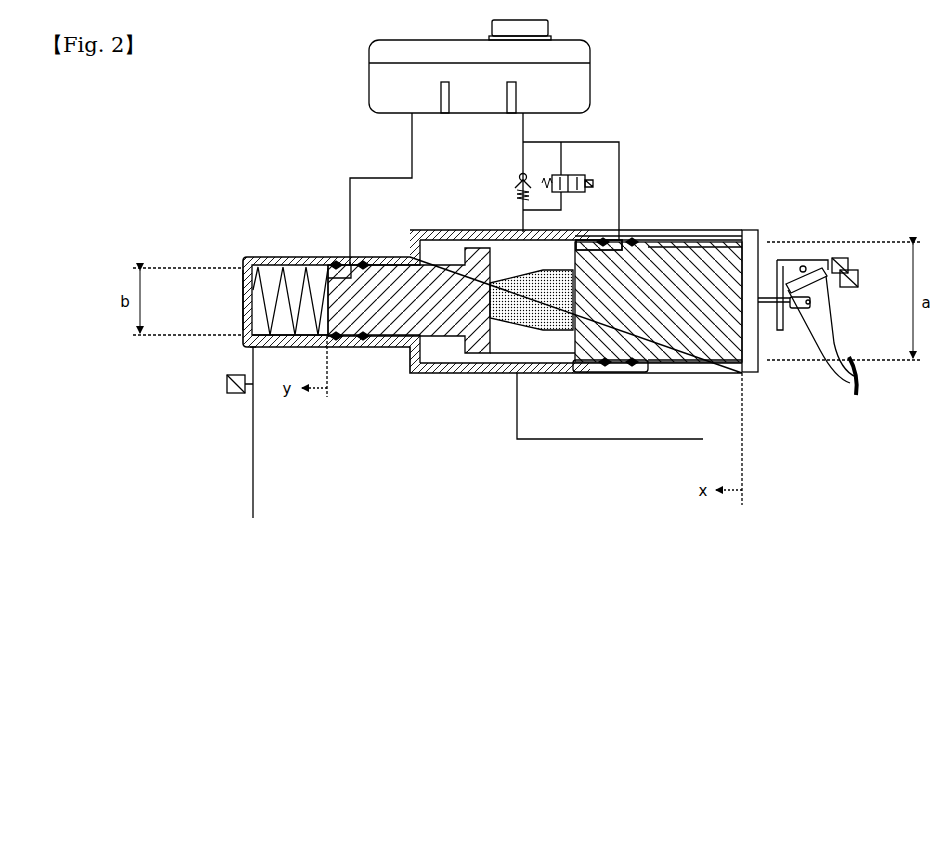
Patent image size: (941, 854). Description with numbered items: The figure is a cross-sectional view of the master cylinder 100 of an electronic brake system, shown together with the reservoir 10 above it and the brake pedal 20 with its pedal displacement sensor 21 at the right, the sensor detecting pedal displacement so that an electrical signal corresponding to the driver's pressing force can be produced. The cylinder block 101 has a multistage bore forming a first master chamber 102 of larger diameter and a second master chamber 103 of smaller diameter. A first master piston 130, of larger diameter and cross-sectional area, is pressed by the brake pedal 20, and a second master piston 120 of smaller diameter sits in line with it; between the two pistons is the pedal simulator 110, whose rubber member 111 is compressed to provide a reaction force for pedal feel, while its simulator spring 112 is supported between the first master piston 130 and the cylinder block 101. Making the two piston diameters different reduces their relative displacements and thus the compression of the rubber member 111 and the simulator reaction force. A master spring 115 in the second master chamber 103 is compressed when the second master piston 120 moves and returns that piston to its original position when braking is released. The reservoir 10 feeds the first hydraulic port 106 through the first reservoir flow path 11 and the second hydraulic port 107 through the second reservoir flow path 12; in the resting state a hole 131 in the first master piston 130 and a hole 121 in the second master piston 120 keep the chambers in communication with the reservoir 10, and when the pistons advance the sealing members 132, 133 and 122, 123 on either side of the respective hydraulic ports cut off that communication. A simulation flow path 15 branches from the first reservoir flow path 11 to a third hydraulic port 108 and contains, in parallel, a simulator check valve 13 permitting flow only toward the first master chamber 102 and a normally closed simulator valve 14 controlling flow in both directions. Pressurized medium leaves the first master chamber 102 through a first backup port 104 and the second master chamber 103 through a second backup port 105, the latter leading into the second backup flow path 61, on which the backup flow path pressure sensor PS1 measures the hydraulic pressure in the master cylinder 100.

The reservoir 10 is at (590, 63).
The first reservoir flow path 11 is at (619, 160).
The second reservoir flow path 12 is at (412, 150).
The simulator check valve 13 is at (519, 174).
The simulator valve 14 is at (572, 175).
The simulation flow path 15 is at (561, 208).
The brake pedal 20 is at (822, 331).
The pedal displacement sensor 21 is at (858, 272).
The second backup flow path 61 is at (253, 497).
The master cylinder 100 is at (238, 250).
The cylinder block 101 is at (247, 277).
The first master chamber 102 is at (575, 368).
The second master chamber 103 is at (262, 303).
The first backup port 104 is at (510, 373).
The second backup port 105 is at (253, 348).
The first hydraulic port 106 is at (621, 236).
The second hydraulic port 107 is at (352, 260).
The third hydraulic port 108 is at (523, 232).
The pedal simulator 110 is at (520, 347).
The rubber member 111 is at (552, 322).
The simulator spring 112 is at (746, 230).
The master spring 115 is at (268, 320).
The second master piston 120 is at (447, 265).
The hole 121 is at (328, 268).
The sealing member 122 is at (337, 261).
The sealing member 123 is at (361, 261).
The first master piston 130 is at (680, 373).
The hole 131 is at (635, 250).
The sealing member 132 is at (607, 237).
The sealing member 133 is at (631, 240).
The backup flow path pressure sensor PS1 is at (223, 384).